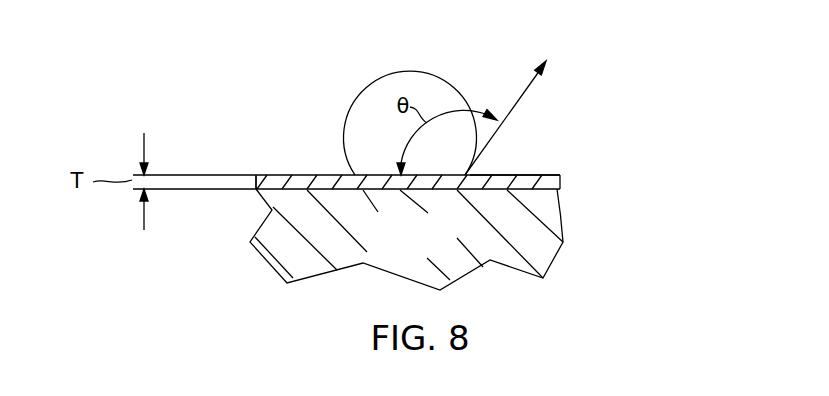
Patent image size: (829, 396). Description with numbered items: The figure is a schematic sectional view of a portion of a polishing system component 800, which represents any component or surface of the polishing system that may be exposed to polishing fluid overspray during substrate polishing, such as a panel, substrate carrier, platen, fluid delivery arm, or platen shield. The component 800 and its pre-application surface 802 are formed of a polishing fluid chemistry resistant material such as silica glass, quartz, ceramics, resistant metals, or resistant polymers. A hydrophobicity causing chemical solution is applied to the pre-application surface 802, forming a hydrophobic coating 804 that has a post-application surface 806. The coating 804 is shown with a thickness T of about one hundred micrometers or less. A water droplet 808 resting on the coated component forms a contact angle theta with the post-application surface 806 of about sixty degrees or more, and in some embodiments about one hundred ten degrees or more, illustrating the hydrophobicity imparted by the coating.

The polishing system component 800 is at (434, 244).
The pre-application surface 802 is at (541, 189).
The hydrophobic coating 804 is at (268, 178).
The post-application surface 806 is at (528, 175).
The water droplet 808 is at (406, 72).